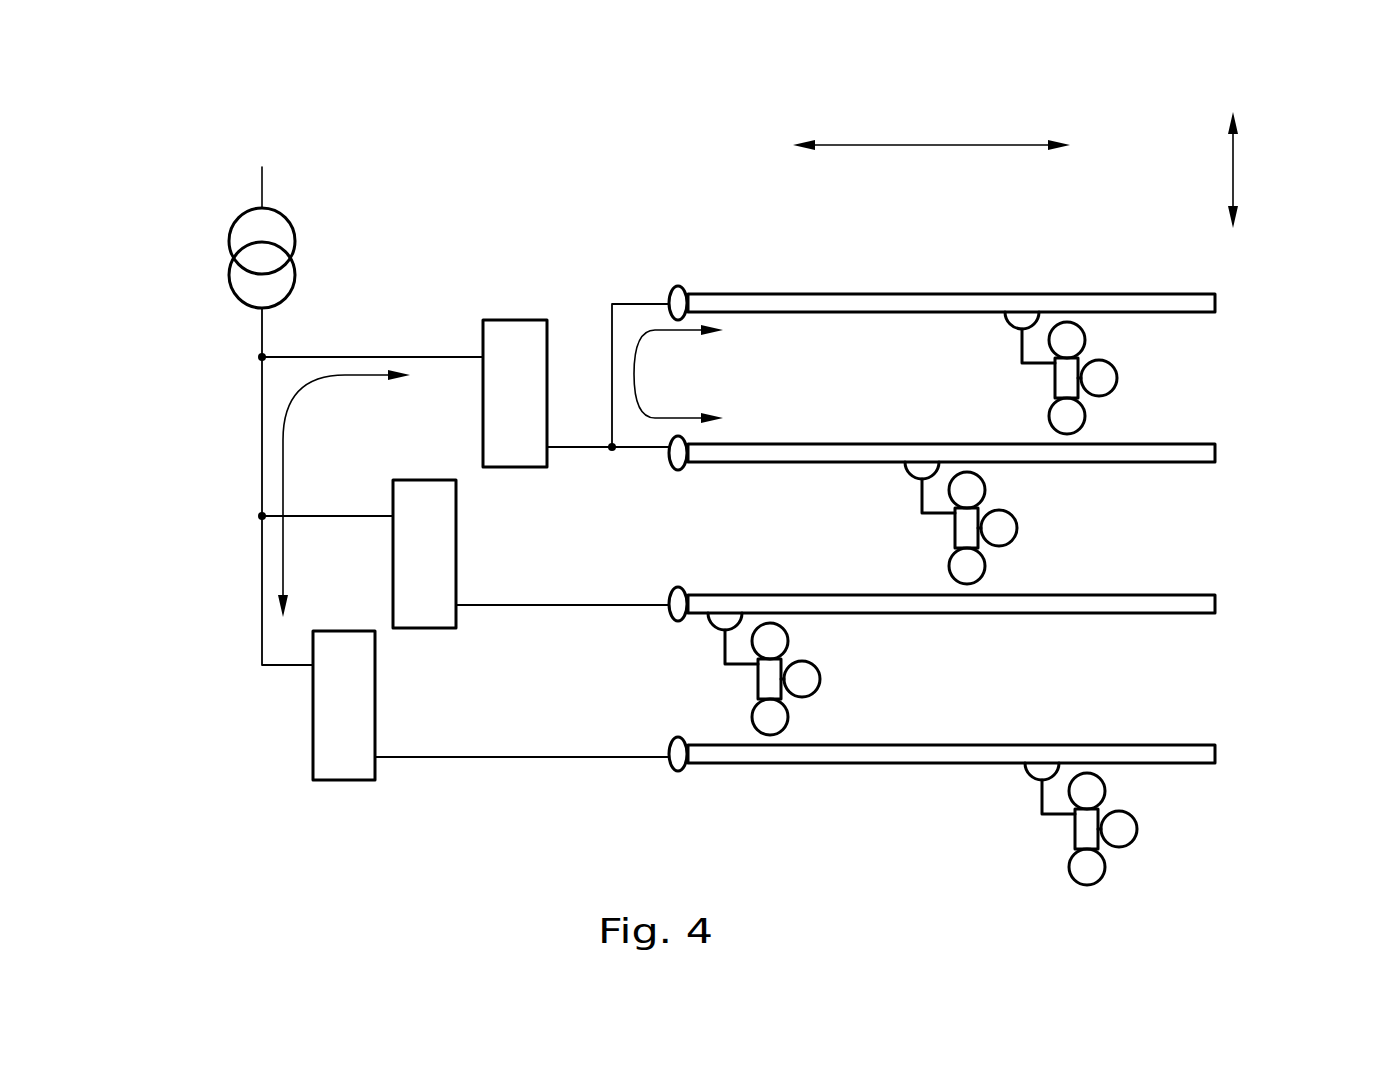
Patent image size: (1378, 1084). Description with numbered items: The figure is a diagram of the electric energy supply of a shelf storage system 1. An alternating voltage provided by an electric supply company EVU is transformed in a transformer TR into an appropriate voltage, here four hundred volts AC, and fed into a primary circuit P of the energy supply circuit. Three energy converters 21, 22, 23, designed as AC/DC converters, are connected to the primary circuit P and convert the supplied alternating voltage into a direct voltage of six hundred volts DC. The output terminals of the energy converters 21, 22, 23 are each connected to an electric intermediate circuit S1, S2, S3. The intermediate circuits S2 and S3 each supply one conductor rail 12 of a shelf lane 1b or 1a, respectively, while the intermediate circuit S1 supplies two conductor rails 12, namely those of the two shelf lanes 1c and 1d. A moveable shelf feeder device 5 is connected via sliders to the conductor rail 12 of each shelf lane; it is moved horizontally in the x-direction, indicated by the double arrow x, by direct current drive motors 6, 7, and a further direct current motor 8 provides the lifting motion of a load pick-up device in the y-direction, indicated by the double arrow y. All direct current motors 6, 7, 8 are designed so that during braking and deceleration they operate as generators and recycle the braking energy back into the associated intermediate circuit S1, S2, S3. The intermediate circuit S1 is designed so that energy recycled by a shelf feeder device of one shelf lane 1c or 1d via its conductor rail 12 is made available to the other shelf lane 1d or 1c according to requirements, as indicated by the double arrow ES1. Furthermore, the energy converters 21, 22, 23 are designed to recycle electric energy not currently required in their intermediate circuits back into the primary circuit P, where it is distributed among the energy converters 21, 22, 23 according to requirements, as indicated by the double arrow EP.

The shelf storage system 1 is at (425, 185).
The shelf feeder device 5 is at (1063, 384).
The direct current drive motor 6 is at (1063, 417).
The direct current drive motor 7 is at (1063, 342).
The direct current motor 8 is at (1095, 384).
The conductor rail 12 is at (862, 293).
The energy converter 21 is at (515, 320).
The energy converter 22 is at (423, 478).
The energy converter 23 is at (343, 630).
The shelf lane 1a is at (1245, 752).
The shelf lane 1b is at (1245, 603).
The shelf lane 1c is at (1245, 451).
The shelf lane 1d is at (1245, 302).
The electric intermediate circuit S1 is at (640, 302).
The electric intermediate circuit S2 is at (628, 607).
The electric intermediate circuit S3 is at (628, 757).
The double arrow ES1 is at (642, 343).
The double arrow EP is at (290, 447).
The primary circuit P is at (262, 607).
The transformer TR is at (229, 271).
The electric supply company EVU is at (264, 164).
The x-direction x is at (931, 127).
The y-direction y is at (1244, 170).